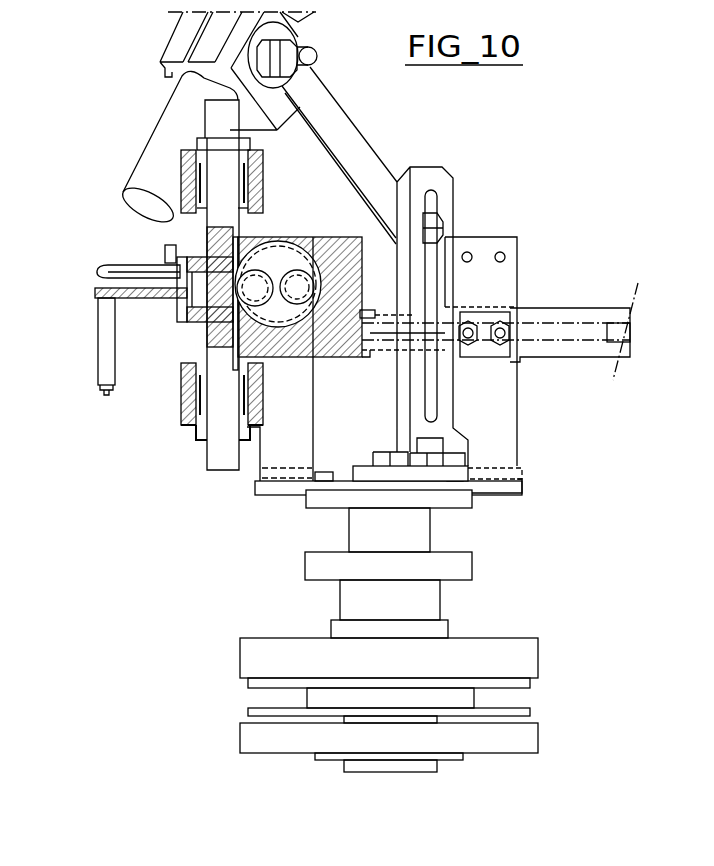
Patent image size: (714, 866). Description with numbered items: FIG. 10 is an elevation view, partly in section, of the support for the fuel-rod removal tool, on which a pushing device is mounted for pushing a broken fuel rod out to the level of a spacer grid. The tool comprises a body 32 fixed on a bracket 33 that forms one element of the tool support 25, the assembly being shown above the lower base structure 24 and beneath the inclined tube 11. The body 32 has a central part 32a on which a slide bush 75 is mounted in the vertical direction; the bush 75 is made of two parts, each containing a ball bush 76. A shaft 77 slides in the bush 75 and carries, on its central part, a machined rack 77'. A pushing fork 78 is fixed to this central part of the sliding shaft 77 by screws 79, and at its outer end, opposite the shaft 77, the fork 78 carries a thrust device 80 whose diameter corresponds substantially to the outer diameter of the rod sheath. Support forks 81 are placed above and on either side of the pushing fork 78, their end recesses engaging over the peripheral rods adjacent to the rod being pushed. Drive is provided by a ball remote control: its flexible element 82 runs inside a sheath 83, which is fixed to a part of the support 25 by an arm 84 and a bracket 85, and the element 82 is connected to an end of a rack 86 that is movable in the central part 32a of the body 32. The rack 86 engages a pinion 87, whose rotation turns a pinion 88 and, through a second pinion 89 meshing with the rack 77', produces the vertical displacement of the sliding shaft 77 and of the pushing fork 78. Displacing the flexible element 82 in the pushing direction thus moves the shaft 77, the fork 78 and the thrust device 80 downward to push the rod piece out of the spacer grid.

The tube 11 is at (117, 173).
The base assembly 24 is at (487, 579).
The tool support 25 is at (152, 398).
The body 32 is at (322, 232).
The central part 32a is at (311, 306).
The bracket 33 is at (277, 450).
The slide bush 75 is at (262, 184).
The ball bush 76 is at (263, 166).
The shaft 77 is at (201, 287).
The rack 77' is at (185, 287).
The pushing fork 78 is at (96, 293).
The screws 79 is at (166, 254).
The thrust device 80 is at (100, 335).
The support forks 81 is at (100, 270).
The flexible element 82 is at (551, 327).
The sheath 83 is at (616, 322).
The arm 84 is at (585, 352).
The bracket 85 is at (517, 440).
The rack 86 is at (385, 335).
The pinion 87 is at (283, 252).
The pinion 88 is at (308, 305).
The second pinion 89 is at (256, 300).